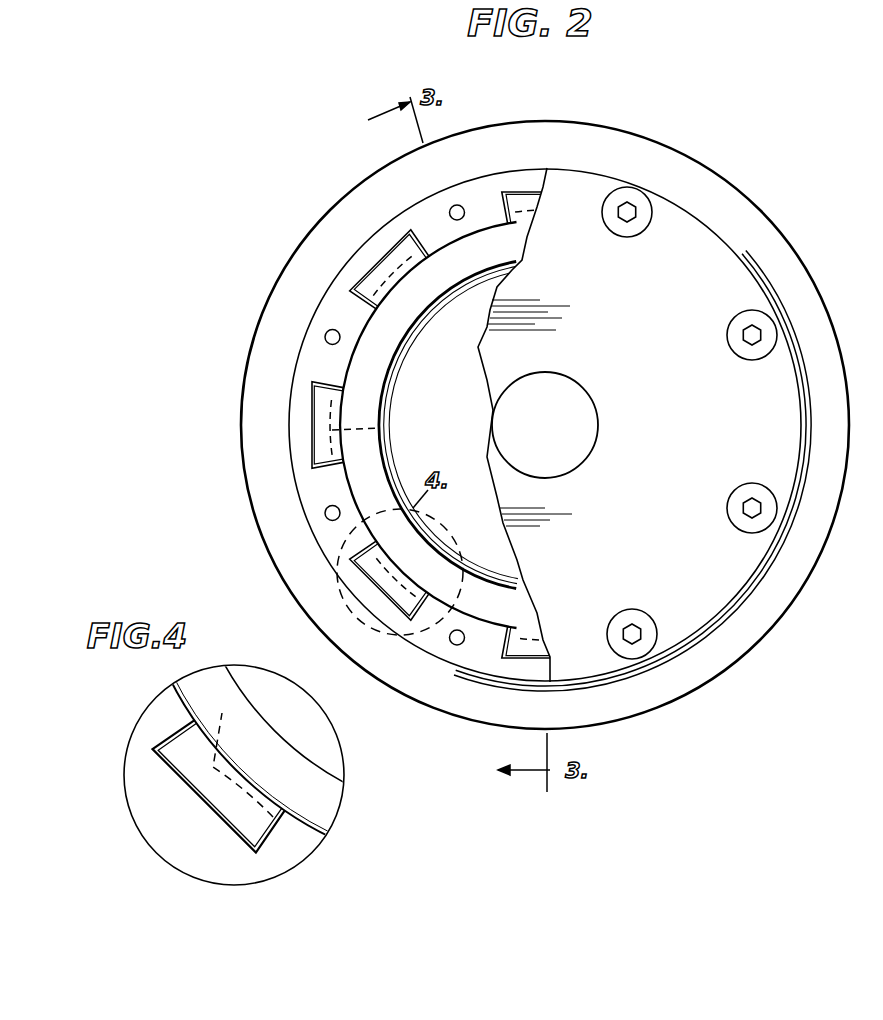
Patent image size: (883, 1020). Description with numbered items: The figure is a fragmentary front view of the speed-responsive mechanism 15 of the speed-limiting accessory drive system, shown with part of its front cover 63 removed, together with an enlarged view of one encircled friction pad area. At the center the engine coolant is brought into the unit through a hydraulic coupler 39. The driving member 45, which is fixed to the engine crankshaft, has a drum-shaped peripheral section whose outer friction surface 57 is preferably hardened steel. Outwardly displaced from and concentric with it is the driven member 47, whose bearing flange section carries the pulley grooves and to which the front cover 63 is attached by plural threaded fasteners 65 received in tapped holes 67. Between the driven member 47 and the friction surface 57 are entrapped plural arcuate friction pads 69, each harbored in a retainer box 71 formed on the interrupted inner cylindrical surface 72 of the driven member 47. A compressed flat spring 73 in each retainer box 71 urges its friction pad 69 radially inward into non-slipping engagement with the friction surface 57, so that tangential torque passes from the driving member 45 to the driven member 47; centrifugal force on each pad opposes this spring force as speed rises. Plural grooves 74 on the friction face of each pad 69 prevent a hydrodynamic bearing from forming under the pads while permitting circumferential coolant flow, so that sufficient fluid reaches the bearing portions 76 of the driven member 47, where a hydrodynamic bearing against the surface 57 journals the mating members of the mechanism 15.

In FIG. 2, the speed-responsive mechanism 15 is at (243, 240).
In FIG. 2, the hydraulic coupler 39 is at (600, 415).
In FIG. 2, the driving member 45 is at (412, 303).
In FIG. 4, the driving member 45 is at (323, 810).
In FIG. 2, the driven member 47 is at (282, 312).
In FIG. 4, the driven member 47 is at (163, 717).
In FIG. 2, the friction surface 57 is at (358, 368).
In FIG. 4, the friction surface 57 is at (340, 798).
In FIG. 2, the front cover 63 is at (478, 378).
In FIG. 2, the threaded fasteners 65 is at (633, 224).
In FIG. 2, the tapped holes 67 is at (452, 222).
In FIG. 2, the friction pads 69 is at (395, 265).
In FIG. 4, the friction pads 69 is at (235, 798).
In FIG. 2, the retainer box 71 is at (305, 468).
In FIG. 4, the retainer box 71 is at (178, 790).
In FIG. 2, the inner cylindrical surface 72 is at (430, 247).
In FIG. 4, the inner cylindrical surface 72 is at (177, 698).
In FIG. 2, the flat spring 73 is at (302, 420).
In FIG. 4, the flat spring 73 is at (212, 817).
In FIG. 2, the grooves 74 is at (398, 422).
In FIG. 4, the grooves 74 is at (238, 752).
In FIG. 2, the bearing portions 76 is at (385, 336).
In FIG. 4, the bearing portions 76 is at (170, 730).